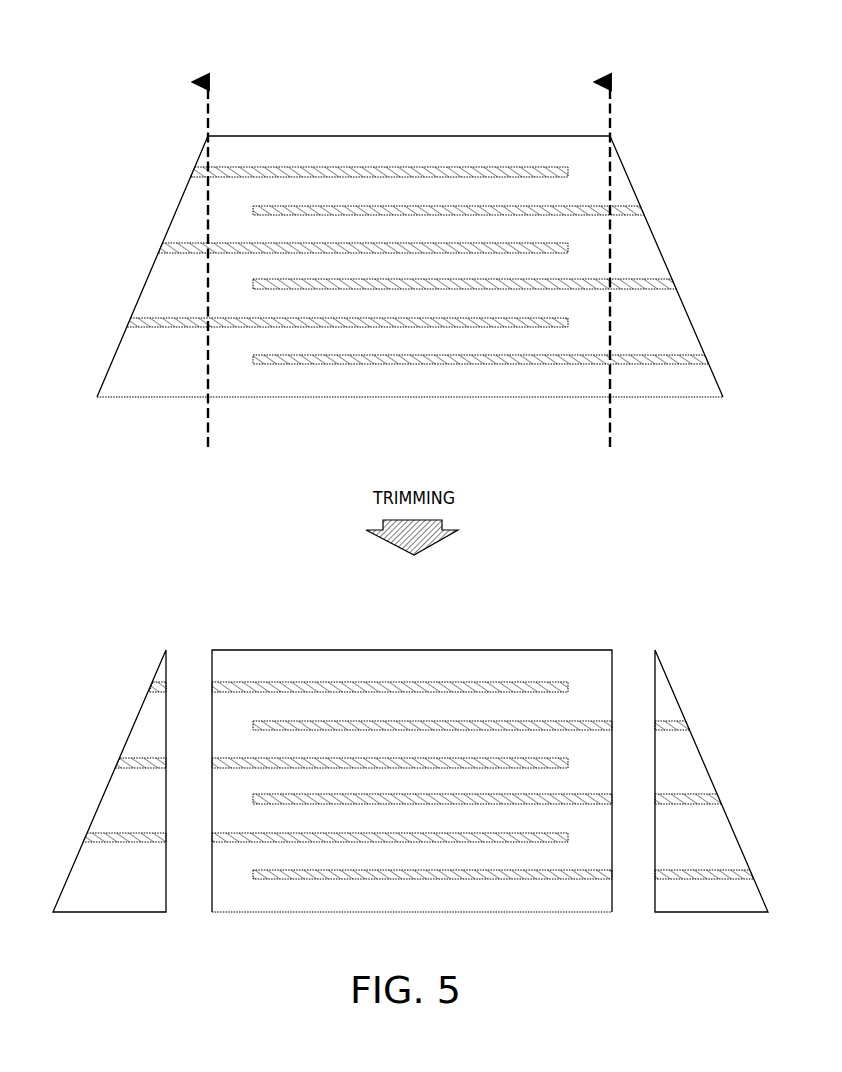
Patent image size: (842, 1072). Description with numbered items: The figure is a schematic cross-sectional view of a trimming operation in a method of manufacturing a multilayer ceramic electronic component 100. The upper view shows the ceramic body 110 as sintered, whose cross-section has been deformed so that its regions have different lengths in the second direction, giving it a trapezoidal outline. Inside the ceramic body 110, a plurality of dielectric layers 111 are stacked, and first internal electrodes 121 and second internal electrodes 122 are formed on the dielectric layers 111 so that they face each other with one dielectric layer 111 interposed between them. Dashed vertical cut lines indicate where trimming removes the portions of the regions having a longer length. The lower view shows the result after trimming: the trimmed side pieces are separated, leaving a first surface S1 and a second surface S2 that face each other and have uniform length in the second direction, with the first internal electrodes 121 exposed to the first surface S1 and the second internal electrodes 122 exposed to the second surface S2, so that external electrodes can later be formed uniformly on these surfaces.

The multilayer capacitor body before trimming 100 is at (313, 23).
The ceramic body 110 is at (402, 136).
The dielectric layer 111 is at (340, 196).
The first internal electrode 121 is at (287, 172).
The second internal electrode 122 is at (505, 210).
The first surface S1 is at (212, 680).
The second surface S2 is at (612, 680).